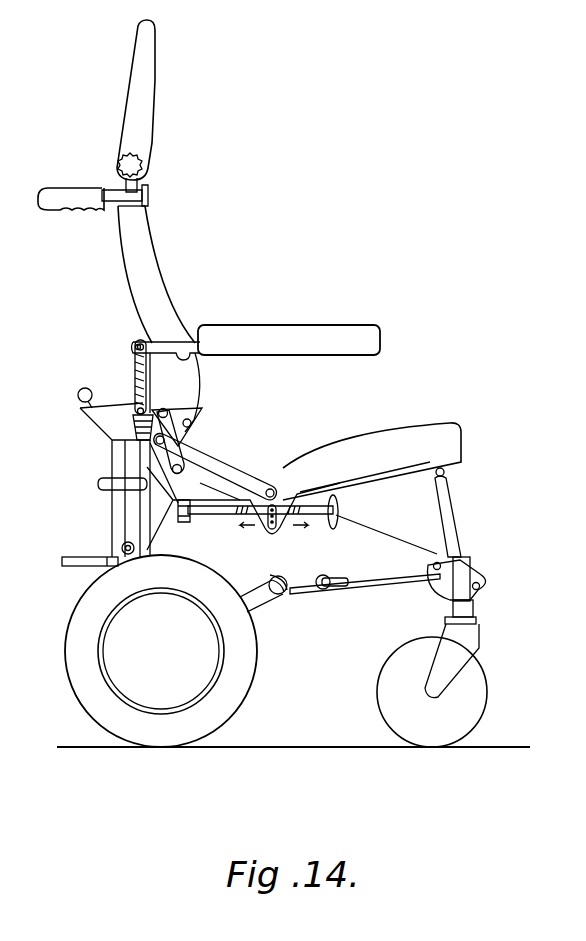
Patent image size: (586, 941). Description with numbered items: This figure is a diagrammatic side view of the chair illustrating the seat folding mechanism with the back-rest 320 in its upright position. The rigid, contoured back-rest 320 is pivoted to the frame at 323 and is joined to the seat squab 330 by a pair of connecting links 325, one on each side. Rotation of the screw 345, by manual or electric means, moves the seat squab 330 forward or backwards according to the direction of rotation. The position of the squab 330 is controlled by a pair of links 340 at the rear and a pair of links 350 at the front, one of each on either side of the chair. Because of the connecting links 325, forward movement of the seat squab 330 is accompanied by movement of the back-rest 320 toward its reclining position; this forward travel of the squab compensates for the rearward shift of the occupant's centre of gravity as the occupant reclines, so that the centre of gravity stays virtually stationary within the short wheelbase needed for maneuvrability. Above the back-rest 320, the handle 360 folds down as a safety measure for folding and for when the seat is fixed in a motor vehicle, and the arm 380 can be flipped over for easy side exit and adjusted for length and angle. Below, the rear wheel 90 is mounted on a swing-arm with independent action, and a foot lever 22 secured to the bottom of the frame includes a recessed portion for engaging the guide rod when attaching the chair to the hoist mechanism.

The foot lever 22 is at (87, 556).
The rear wheel 90 is at (165, 740).
The back-rest 320 is at (160, 283).
The pivot 323 is at (195, 428).
The connecting link 325 is at (235, 473).
The seat squab 330 is at (348, 452).
The rear link 340 is at (200, 400).
The screw 345 is at (338, 506).
The front link 350 is at (447, 506).
The handle 360 is at (75, 197).
The arm 380 is at (307, 342).